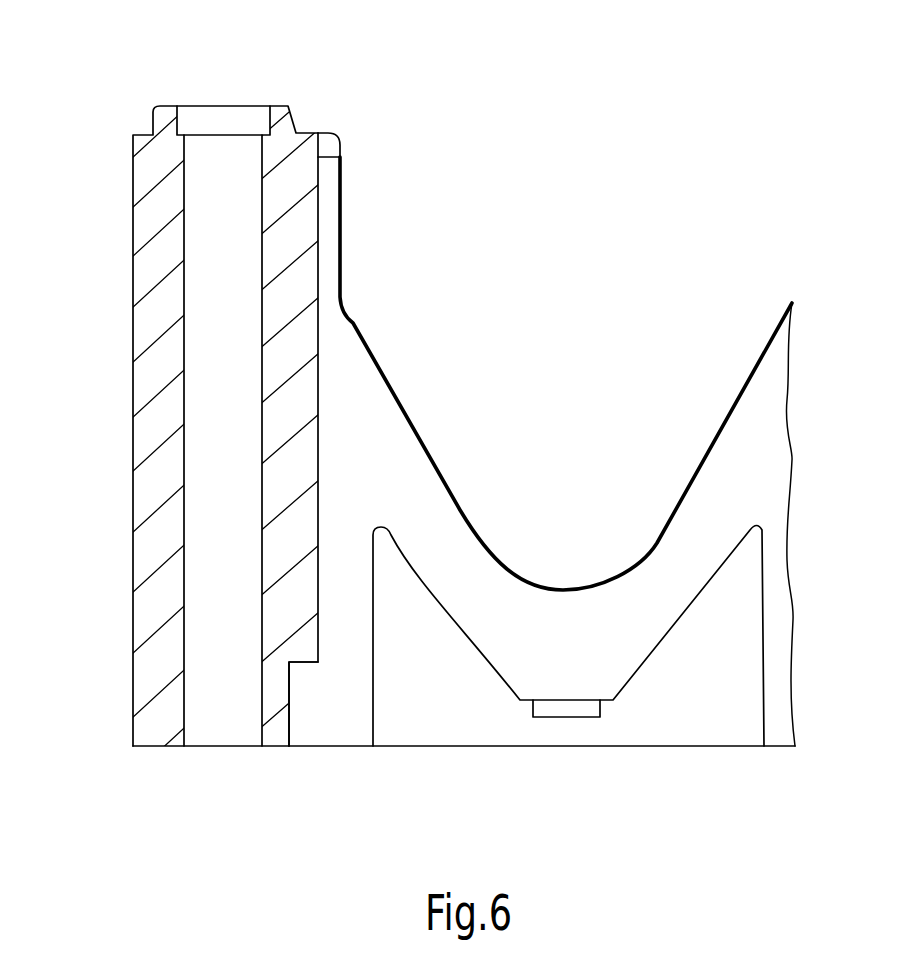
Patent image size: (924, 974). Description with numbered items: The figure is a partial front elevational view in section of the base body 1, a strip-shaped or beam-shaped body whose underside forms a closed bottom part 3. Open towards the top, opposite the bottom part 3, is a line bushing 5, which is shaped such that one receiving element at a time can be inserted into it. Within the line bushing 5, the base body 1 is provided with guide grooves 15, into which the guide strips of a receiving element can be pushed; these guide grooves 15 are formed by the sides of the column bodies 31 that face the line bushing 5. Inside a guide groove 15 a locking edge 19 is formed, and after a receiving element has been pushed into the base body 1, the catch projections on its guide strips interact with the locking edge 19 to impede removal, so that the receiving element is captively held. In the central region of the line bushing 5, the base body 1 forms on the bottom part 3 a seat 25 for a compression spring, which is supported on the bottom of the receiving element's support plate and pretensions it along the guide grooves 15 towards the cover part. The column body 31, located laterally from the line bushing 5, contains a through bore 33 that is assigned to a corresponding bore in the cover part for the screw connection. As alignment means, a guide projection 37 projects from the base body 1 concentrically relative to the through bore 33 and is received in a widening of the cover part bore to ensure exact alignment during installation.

The base body 1 is at (130, 338).
The bottom part 3 is at (637, 703).
The line bushing 5 is at (345, 293).
The guide groove 15 is at (314, 399).
The locking edge 19 is at (304, 663).
The seat 25 is at (556, 700).
The column body 31 is at (163, 247).
The through bore 33 is at (185, 423).
The guide projection 37 is at (293, 112).